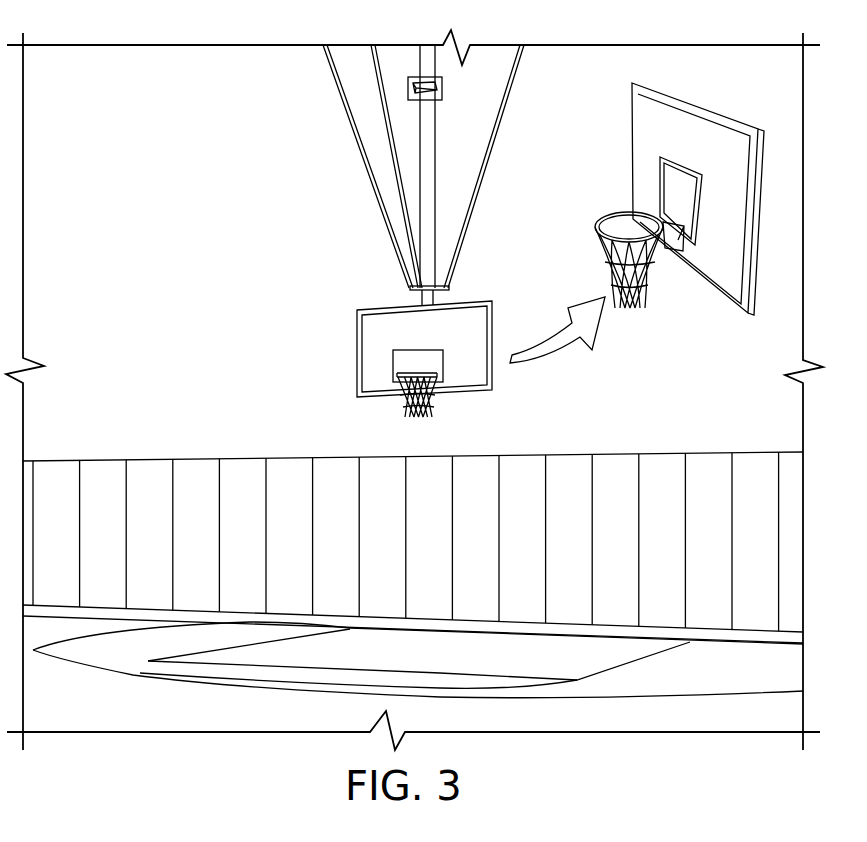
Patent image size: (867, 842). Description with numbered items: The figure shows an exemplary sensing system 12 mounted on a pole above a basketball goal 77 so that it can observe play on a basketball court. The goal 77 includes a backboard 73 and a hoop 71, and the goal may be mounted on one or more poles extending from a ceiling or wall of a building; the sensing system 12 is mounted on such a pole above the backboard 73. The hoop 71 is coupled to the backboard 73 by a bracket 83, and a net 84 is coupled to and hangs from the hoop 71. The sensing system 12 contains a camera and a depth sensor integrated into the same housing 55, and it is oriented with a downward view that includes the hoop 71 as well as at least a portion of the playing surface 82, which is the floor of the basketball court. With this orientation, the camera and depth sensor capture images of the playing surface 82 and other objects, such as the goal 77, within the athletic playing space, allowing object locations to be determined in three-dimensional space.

The sensing system 12 is at (428, 108).
The housing 55 is at (441, 92).
The backboard 73 is at (473, 300).
The basketball goal 77 is at (507, 240).
The hoop 71 is at (393, 364).
The net 84 is at (394, 405).
The bracket 83 is at (672, 222).
The playing surface 82 is at (122, 664).